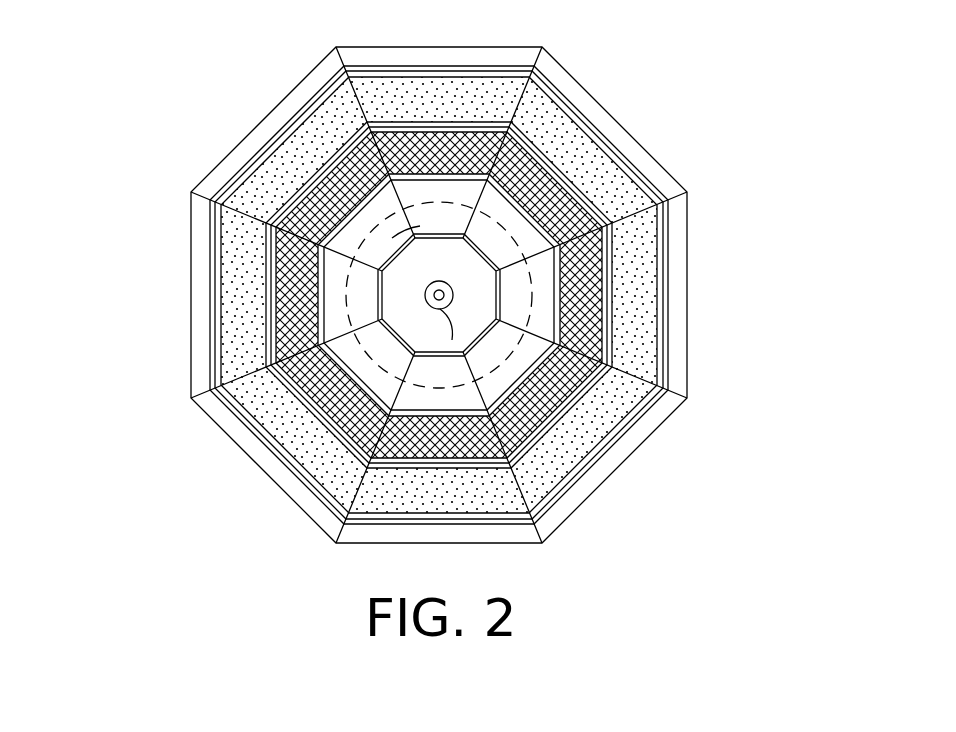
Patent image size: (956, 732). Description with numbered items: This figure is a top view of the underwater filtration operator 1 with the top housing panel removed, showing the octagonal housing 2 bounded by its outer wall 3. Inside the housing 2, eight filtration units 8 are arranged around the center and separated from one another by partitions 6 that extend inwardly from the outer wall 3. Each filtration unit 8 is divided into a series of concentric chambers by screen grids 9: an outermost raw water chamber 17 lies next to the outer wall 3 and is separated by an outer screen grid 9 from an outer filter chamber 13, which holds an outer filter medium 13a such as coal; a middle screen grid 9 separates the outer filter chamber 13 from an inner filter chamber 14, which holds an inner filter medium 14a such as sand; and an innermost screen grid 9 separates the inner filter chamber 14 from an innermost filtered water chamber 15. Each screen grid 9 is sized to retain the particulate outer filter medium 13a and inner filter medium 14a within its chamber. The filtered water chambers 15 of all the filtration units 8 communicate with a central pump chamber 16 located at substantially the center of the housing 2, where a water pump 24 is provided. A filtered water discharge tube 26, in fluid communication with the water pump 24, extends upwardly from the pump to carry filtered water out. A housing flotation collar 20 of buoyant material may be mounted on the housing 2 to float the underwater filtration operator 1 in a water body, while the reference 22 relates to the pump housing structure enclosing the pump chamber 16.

The underwater filtration operator 1 is at (148, 98).
The housing 2 is at (188, 228).
The outer wall 3 is at (690, 318).
The partitions 6 is at (343, 60).
The filtration units 8 is at (520, 37).
The screen grids 9 is at (333, 107).
The outer filter chamber 13 is at (328, 98).
The outer filter medium 13a is at (245, 278).
The inner filter chamber 14 is at (320, 193).
The inner filter medium 14a is at (318, 278).
The filtered water chamber 15 is at (428, 222).
The pump chamber 16 is at (418, 305).
The raw water chamber 17 is at (228, 135).
The housing flotation collar 20 is at (390, 222).
The central opening 22 is at (447, 282).
The water pump 24 is at (440, 308).
The filtered water discharge tube 26 is at (440, 281).